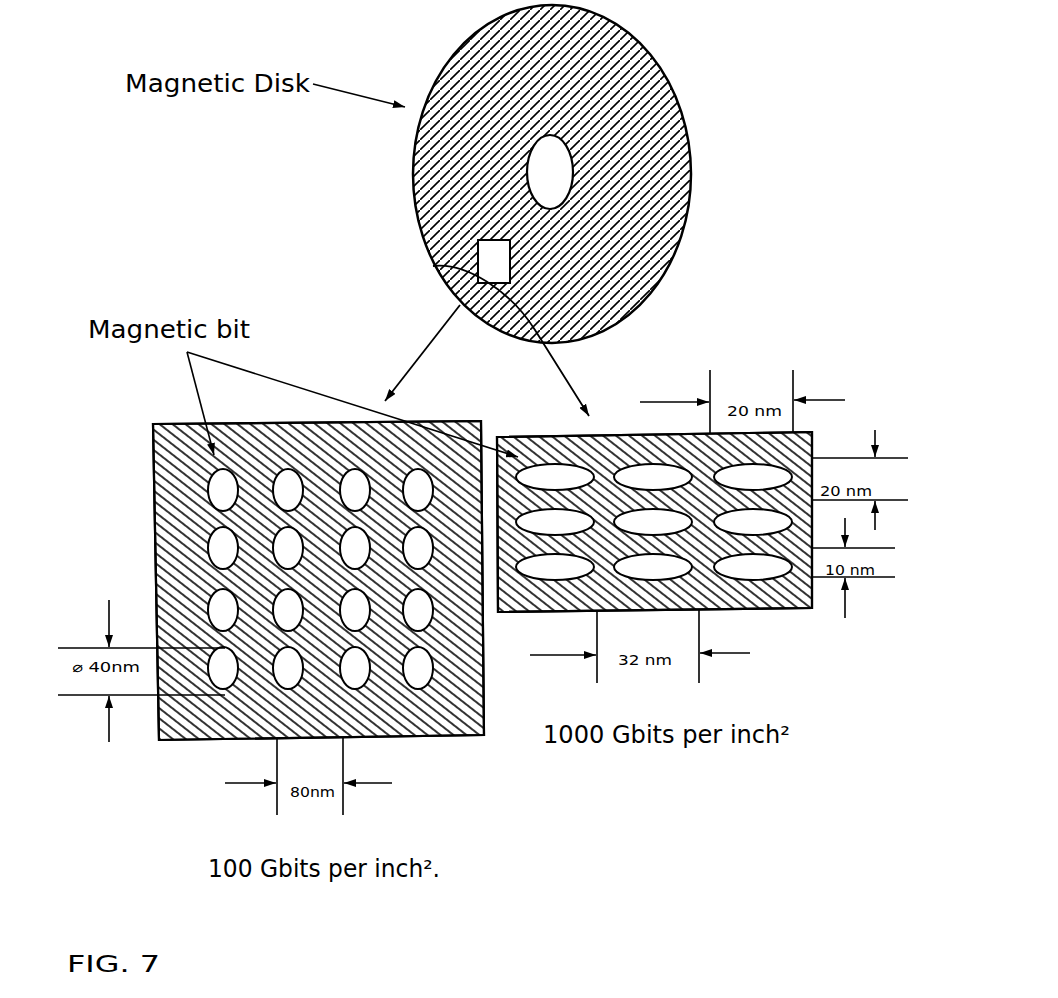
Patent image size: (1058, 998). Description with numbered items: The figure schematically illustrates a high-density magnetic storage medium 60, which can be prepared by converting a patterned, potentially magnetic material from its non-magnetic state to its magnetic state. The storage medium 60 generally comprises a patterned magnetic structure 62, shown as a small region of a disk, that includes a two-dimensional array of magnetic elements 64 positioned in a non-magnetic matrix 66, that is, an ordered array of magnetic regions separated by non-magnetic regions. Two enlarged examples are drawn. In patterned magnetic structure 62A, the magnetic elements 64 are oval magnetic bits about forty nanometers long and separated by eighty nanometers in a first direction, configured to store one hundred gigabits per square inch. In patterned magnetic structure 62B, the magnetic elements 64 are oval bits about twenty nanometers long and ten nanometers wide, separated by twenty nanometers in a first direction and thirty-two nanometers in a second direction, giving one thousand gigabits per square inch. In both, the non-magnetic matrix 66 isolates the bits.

The high-density magnetic storage medium 60 is at (641, 46).
The patterned magnetic structure 62 is at (433, 266).
The patterned magnetic structure 62A is at (116, 499).
The patterned magnetic structure 62B is at (762, 370).
The magnetic elements 64 is at (425, 675).
The non-magnetic matrix 66 is at (486, 729).